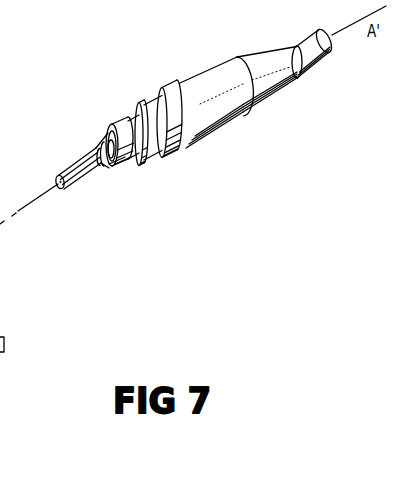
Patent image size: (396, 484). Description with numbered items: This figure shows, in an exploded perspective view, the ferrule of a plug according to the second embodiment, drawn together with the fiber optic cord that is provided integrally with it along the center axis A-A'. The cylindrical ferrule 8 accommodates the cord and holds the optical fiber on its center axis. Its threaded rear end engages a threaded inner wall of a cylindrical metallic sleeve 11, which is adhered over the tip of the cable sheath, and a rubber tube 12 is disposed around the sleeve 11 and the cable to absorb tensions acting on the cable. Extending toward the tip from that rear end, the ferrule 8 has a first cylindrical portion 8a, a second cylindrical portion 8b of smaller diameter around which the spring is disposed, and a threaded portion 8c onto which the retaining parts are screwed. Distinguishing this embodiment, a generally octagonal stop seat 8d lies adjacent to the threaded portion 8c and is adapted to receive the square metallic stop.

The ferrule 8 is at (75, 149).
The first cylindrical portion 8a is at (188, 156).
The second cylindrical portion 8b is at (145, 164).
The threaded portion 8c is at (122, 166).
The stop seat 8d is at (127, 164).
The metallic sleeve 11 is at (208, 142).
The rubber tube 12 is at (235, 112).